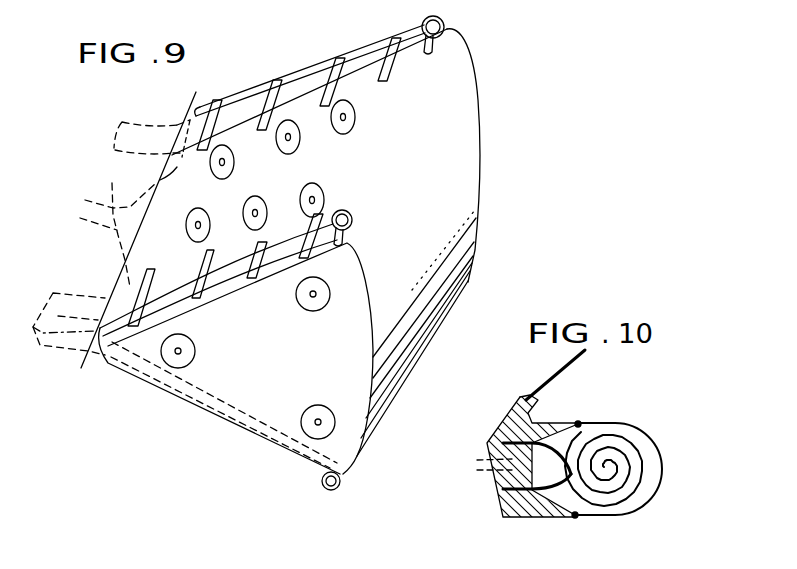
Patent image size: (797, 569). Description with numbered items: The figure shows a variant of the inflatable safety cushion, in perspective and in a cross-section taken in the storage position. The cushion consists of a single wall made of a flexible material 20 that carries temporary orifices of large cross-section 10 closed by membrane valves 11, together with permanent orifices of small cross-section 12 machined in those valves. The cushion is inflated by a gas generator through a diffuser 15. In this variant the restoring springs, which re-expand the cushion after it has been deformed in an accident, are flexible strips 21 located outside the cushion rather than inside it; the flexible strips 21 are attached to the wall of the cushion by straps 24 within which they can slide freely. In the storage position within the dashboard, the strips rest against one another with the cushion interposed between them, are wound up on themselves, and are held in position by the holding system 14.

In FIG. 9, the temporary orifices of large cross-section 10 is at (355, 104).
In FIG. 9, the membrane valves 11 is at (322, 184).
In FIG. 9, the permanent orifices of small cross-section 12 is at (298, 141).
In FIG. 10, the holding system 14 is at (638, 423).
In FIG. 9, the diffuser 15 is at (112, 183).
In FIG. 10, the diffuser 15 is at (510, 482).
In FIG. 9, the flexible material 20 is at (438, 155).
In FIG. 10, the flexible material 20 is at (610, 487).
In FIG. 9, the flexible strips 21 is at (362, 63).
In FIG. 10, the flexible strips 21 is at (558, 447).
In FIG. 9, the straps 24 is at (314, 78).